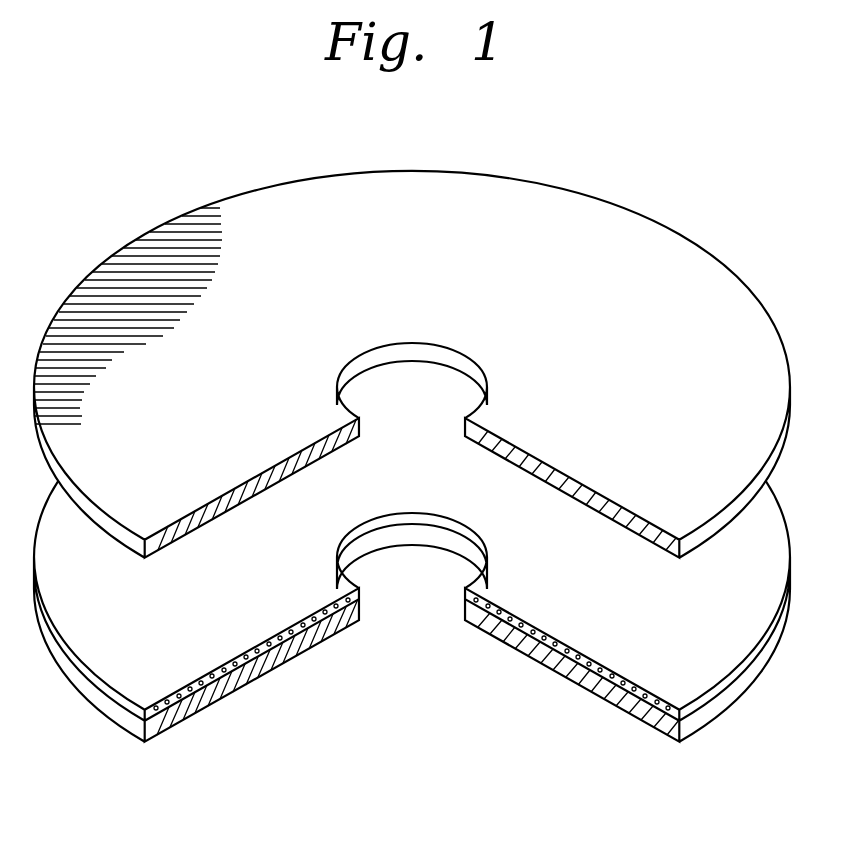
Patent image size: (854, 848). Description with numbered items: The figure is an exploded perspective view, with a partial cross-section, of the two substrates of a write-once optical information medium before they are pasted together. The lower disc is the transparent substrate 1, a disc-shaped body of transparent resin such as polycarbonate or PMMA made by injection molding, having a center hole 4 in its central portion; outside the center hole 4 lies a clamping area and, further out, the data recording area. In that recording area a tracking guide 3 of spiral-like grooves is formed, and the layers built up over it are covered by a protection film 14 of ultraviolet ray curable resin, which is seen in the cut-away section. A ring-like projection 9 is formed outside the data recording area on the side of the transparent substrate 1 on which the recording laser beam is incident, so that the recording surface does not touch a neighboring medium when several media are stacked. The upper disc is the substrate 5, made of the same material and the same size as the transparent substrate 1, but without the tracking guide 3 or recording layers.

The transparent substrate 1 is at (242, 677).
The tracking guide 3 is at (600, 677).
The center hole 4 is at (407, 408).
The substrate 5 is at (648, 424).
The ring-like projection 9 is at (490, 632).
The protection film 14 is at (263, 627).